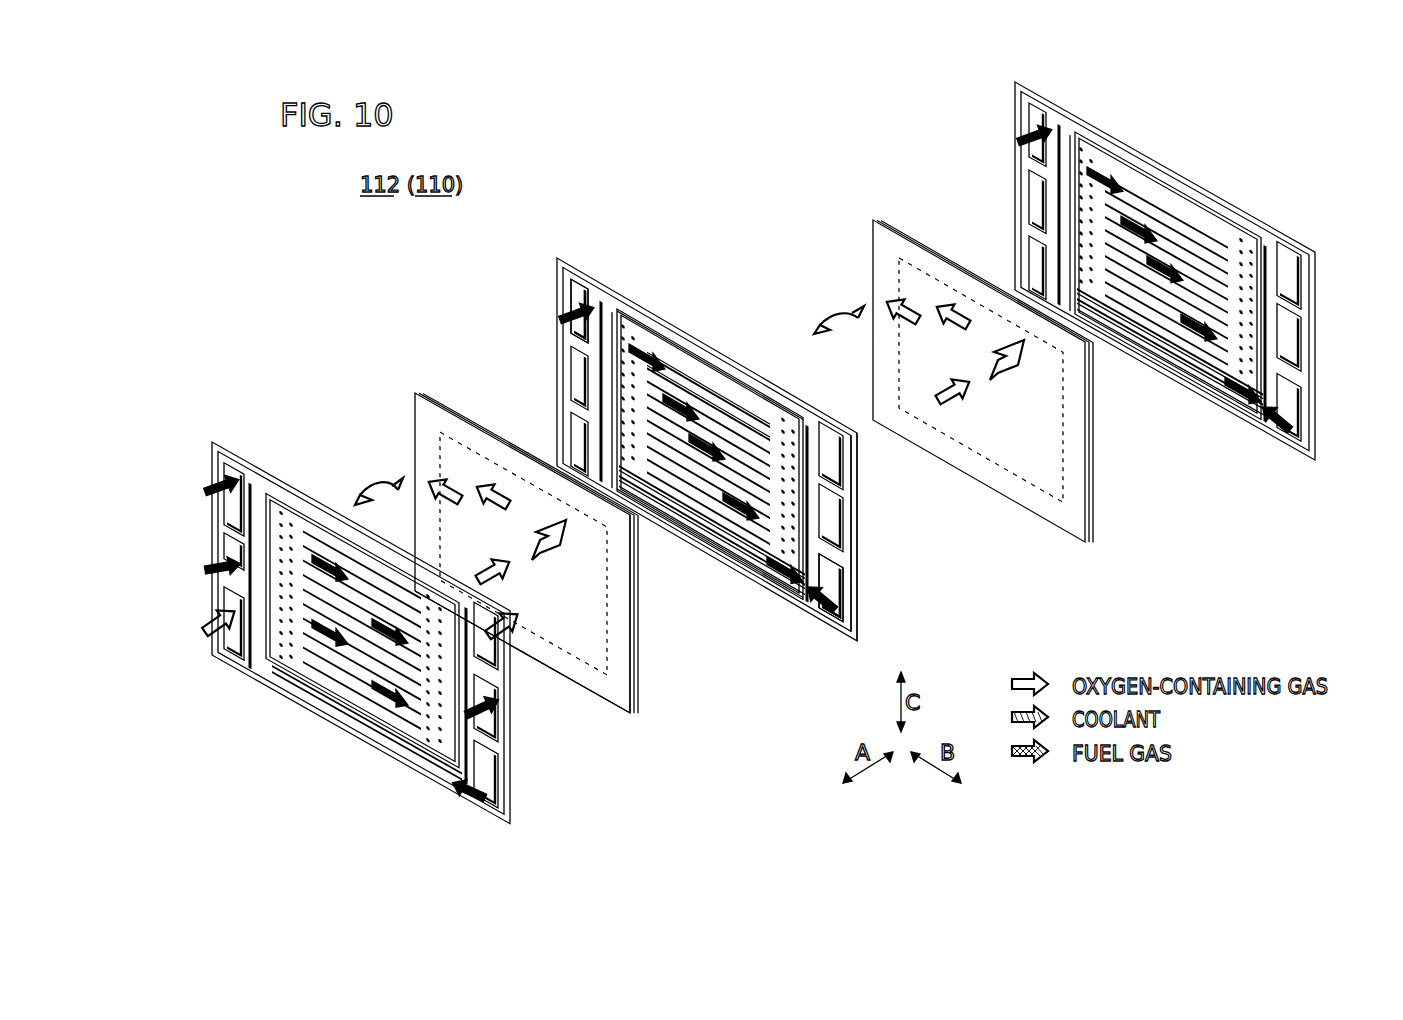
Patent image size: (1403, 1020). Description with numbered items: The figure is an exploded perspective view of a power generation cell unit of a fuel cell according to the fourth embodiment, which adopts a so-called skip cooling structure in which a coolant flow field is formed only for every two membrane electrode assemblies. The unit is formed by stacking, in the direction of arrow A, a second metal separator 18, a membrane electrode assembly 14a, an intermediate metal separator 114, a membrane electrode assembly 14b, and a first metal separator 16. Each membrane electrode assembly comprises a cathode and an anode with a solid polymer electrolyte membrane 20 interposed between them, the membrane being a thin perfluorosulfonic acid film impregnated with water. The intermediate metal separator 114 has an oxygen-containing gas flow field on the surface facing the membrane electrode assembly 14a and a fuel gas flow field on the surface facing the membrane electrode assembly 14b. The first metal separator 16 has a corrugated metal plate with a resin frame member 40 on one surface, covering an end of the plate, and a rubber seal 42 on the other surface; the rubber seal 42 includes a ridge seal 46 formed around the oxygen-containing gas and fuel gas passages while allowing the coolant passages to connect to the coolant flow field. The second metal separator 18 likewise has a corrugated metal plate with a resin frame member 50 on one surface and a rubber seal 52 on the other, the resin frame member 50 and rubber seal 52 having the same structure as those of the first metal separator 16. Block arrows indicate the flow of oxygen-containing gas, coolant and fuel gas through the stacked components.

The first metal separator 16 is at (421, 609).
The membrane electrode assembly 14b is at (520, 538).
The intermediate metal separator 114 is at (937, 364).
The membrane electrode assembly 14a is at (871, 219).
The second metal separator 18 is at (1014, 81).
The solid polymer electrolyte membrane 20 is at (632, 640).
The resin frame member 40 is at (440, 551).
The rubber seal 42 is at (272, 690).
The ridge seal 46 is at (332, 525).
The resin frame member 50 is at (858, 535).
The rubber seal 52 is at (858, 506).